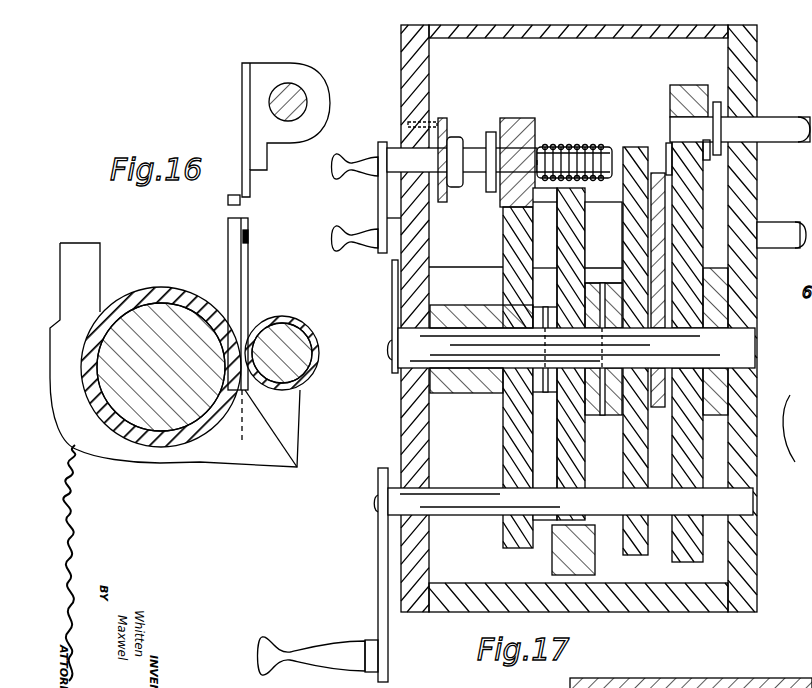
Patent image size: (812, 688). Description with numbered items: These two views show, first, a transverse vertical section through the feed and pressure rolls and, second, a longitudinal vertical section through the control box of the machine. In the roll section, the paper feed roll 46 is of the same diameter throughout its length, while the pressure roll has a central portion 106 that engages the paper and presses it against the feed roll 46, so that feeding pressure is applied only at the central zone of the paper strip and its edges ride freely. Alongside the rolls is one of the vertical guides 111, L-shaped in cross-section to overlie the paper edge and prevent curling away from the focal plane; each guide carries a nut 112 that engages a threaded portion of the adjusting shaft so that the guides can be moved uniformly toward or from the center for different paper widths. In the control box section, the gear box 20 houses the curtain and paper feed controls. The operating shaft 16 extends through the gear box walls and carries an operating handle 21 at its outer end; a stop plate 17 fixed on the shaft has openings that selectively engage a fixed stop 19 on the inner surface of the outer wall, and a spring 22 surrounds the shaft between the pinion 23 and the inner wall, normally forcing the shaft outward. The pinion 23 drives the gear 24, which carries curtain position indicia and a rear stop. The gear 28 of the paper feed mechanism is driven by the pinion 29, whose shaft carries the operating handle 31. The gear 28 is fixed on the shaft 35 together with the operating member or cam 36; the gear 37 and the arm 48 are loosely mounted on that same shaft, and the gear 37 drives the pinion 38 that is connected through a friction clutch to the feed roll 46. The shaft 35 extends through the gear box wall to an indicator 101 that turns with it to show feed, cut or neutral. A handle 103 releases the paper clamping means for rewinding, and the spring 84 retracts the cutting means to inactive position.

In FIG. 16, the nut 112 is at (263, 83).
In FIG. 16, the vertical guide 111 is at (243, 287).
In FIG. 16, the paper feed roll 46 is at (165, 313).
In FIG. 16, the central portion 106 is at (290, 313).
In FIG. 17, the gear box 20 is at (412, 426).
In FIG. 17, the handle 103 is at (355, 165).
In FIG. 17, the operating handle 21 is at (348, 235).
In FIG. 17, the fixed stop 19 is at (438, 122).
In FIG. 17, the stop plate 17 is at (450, 140).
In FIG. 17, the pinion 23 is at (522, 135).
In FIG. 17, the operating shaft 16 is at (564, 145).
In FIG. 17, the spring 22 is at (581, 145).
In FIG. 17, the gear 24 is at (510, 426).
In FIG. 17, the gear 28 is at (565, 400).
In FIG. 17, the operating member or cam 36 is at (633, 147).
In FIG. 17, the arm 48 is at (658, 172).
In FIG. 17, the pinion 38 is at (694, 86).
In FIG. 17, the gear 37 is at (683, 545).
In FIG. 17, the indicator 101 is at (392, 311).
In FIG. 17, the shaft 35 is at (465, 340).
In FIG. 17, the operating handle 31 is at (380, 597).
In FIG. 17, the pinion 29 is at (560, 567).
In FIG. 17, the spring 84 is at (811, 380).